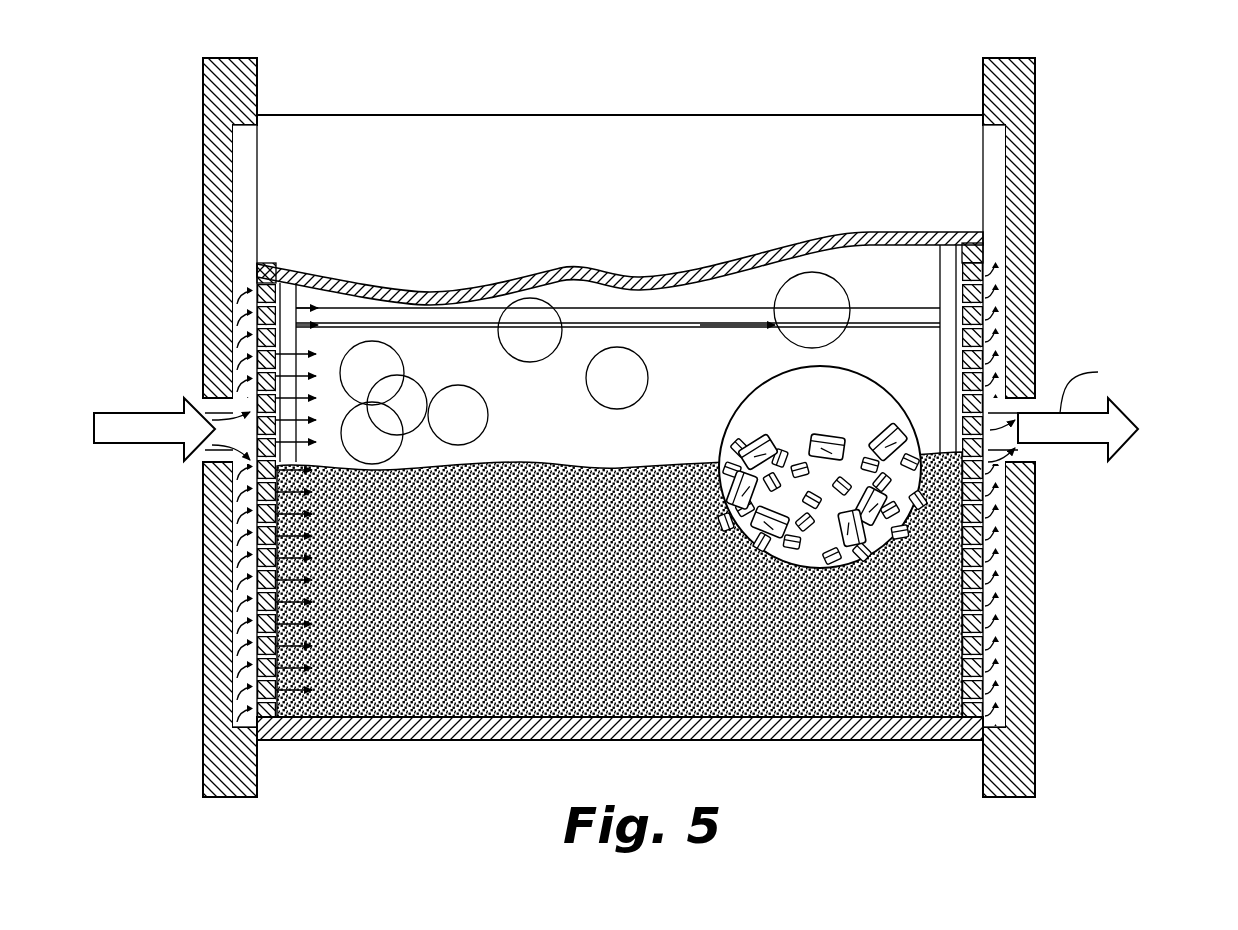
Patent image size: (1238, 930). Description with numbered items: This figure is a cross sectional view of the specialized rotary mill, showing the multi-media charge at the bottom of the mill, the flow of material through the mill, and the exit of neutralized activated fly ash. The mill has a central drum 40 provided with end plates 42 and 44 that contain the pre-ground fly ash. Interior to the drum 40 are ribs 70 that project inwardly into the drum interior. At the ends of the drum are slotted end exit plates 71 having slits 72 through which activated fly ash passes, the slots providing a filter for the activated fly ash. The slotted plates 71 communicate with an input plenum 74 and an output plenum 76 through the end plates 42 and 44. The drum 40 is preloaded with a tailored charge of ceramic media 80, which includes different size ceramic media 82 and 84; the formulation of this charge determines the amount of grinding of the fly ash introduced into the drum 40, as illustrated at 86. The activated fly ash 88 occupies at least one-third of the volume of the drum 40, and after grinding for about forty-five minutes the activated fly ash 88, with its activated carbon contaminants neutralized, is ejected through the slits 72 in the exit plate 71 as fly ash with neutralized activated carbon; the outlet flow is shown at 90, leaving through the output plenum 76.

The central drum 40 is at (640, 133).
The end plate 42 is at (257, 76).
The end plate 44 is at (1035, 78).
The ribs 70 is at (966, 741).
The slotted end exit plate 71 is at (268, 262).
The slits 72 is at (290, 274).
The input plenum 74 is at (243, 150).
The output plenum 76 is at (1000, 172).
The tailored charge of ceramic media 80 is at (829, 456).
The ceramic media 82 is at (829, 470).
The ceramic media 84 is at (790, 437).
The fly ash introduced into the drum 86 is at (163, 420).
The activated fly ash 88 is at (600, 466).
The outlet flow 90 is at (1000, 662).